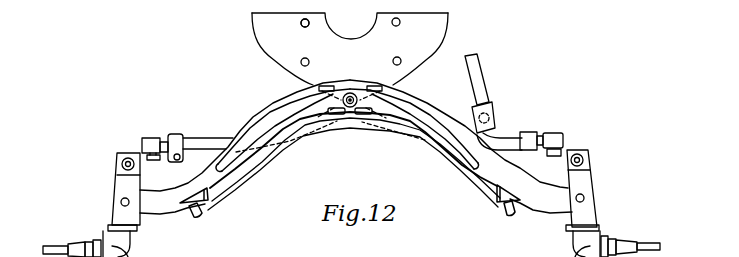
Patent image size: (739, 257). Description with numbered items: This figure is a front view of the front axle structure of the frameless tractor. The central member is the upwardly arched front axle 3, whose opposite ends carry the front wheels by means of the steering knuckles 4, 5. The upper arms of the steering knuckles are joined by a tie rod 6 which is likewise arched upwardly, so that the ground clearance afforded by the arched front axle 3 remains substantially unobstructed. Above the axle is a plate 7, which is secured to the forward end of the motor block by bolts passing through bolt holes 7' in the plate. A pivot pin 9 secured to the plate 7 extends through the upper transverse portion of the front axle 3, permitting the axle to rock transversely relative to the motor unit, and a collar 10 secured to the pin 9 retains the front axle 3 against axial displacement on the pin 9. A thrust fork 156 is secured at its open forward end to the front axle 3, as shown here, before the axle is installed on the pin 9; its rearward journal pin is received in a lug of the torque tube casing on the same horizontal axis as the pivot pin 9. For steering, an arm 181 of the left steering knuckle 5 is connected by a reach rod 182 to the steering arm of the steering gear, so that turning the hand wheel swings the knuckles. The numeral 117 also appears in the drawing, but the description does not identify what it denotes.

The front axle 3 is at (273, 105).
The steering knuckle 4 is at (131, 247).
The steering knuckle 5 is at (573, 246).
The tie rod 6 is at (207, 140).
The plate 7 is at (356, 52).
The bolt holes 7' is at (312, 36).
The pivot pin 9 is at (348, 93).
The collar 10 is at (357, 93).
The thrust fork 156 is at (405, 143).
The arm 181 is at (531, 156).
The reach rod 182 is at (478, 87).
The lower member 117 is at (263, 255).